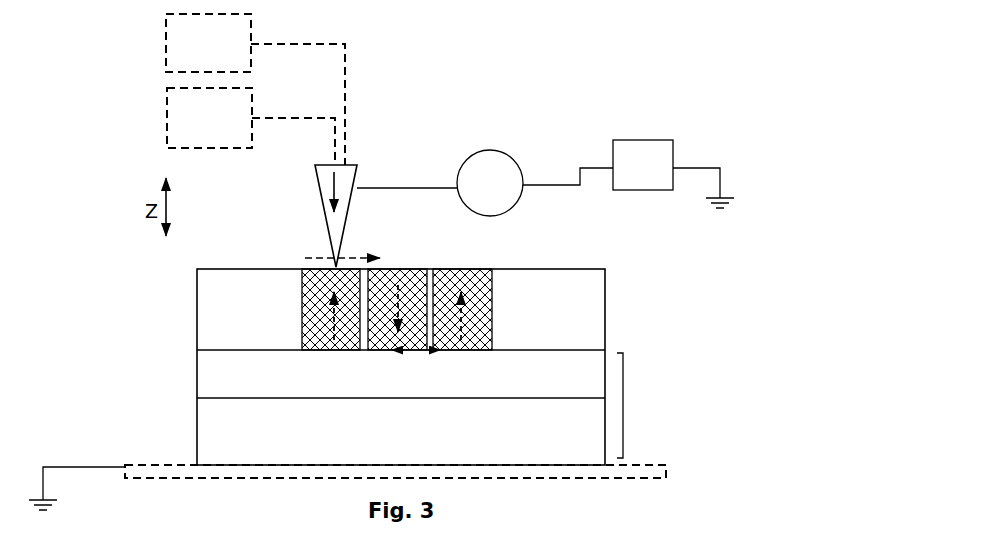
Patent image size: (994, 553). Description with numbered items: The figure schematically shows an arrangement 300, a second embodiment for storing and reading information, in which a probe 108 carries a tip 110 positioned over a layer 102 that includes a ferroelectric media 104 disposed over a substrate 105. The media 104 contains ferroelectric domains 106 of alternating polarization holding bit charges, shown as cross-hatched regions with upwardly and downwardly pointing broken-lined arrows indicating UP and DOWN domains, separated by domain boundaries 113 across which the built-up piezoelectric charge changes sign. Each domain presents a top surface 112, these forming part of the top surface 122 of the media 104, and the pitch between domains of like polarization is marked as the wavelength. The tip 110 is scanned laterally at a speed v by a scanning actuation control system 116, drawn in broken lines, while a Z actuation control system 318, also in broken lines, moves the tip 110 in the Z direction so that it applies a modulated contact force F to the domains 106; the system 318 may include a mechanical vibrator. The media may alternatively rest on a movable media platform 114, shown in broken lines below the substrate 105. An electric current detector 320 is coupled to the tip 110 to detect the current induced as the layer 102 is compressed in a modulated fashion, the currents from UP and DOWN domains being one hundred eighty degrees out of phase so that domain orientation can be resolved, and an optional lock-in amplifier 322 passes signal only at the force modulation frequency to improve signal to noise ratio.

The arrangement 300 is at (518, 101).
The Z actuation control system 318 is at (255, 89).
The scanning actuation control system 116 is at (251, 126).
The probe 108 is at (311, 197).
The tip 110 is at (333, 230).
The top surface of media 122 is at (248, 258).
The electric current detector 320 is at (487, 166).
The lock-in amplifier 322 is at (673, 174).
The layer 102 is at (185, 309).
The ferroelectric media 104 is at (610, 293).
The substrate 105 is at (432, 405).
The ferroelectric domains 106 is at (463, 324).
The top surface of domain 112 is at (410, 268).
The domain boundary 113 is at (430, 288).
The movable media platform 114 is at (633, 471).